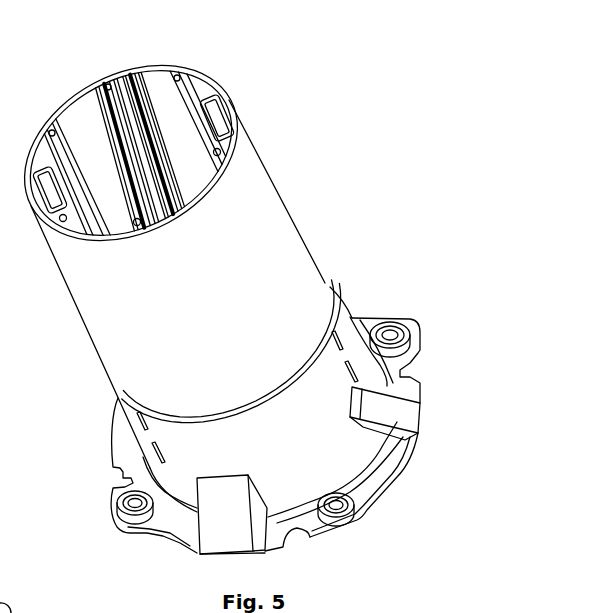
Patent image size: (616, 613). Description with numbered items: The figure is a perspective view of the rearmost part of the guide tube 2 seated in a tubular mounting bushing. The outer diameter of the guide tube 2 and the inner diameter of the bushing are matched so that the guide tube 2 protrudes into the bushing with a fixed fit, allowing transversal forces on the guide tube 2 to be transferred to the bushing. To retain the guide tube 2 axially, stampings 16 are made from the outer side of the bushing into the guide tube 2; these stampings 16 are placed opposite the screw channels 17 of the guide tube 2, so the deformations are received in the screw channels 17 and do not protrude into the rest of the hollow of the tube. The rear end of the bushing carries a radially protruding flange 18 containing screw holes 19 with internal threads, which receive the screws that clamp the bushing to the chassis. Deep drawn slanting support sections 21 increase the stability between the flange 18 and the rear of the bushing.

The guide tube 2 is at (93, 297).
The stampings 16 is at (353, 385).
The screw channels 17 is at (110, 92).
The flange 18 is at (122, 454).
The screw holes 19 is at (402, 328).
The slanting support sections 21 is at (397, 420).